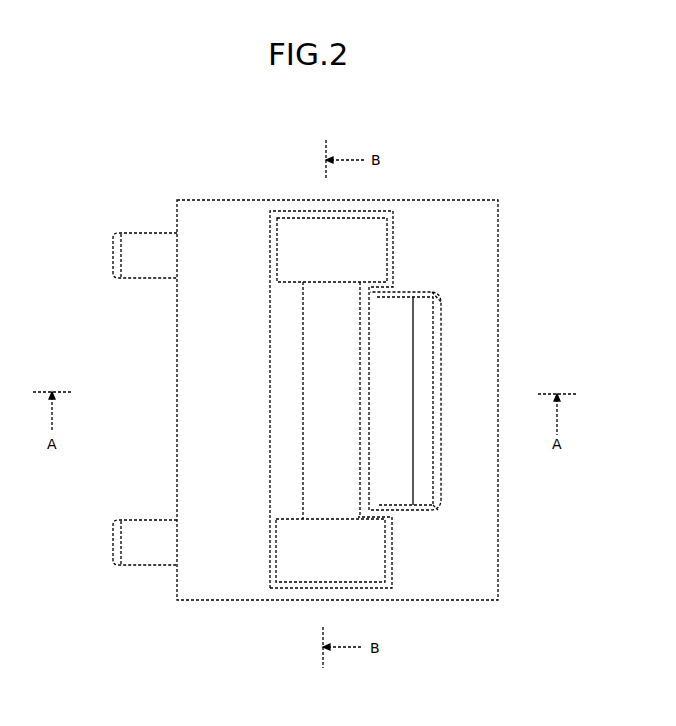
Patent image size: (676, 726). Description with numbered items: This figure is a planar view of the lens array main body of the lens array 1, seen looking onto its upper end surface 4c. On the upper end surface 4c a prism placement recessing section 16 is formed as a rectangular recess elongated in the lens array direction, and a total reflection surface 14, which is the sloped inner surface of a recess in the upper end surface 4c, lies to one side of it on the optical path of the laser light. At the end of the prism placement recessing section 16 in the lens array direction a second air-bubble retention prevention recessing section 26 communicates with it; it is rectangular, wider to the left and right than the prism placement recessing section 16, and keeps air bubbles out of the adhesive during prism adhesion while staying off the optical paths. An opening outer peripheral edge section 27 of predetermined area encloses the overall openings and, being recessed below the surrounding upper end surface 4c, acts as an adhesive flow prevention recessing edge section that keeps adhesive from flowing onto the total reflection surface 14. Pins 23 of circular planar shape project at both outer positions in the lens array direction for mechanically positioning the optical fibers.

The lens array 1 is at (115, 210).
The upper end surface 4c is at (425, 215).
The pins 23 is at (128, 280).
The second air-bubble retention prevention recessing section 26 is at (272, 250).
The opening outer peripheral edge section 27 is at (270, 397).
The prism placement recessing section 16 is at (302, 410).
The total reflection surface 14 is at (399, 400).